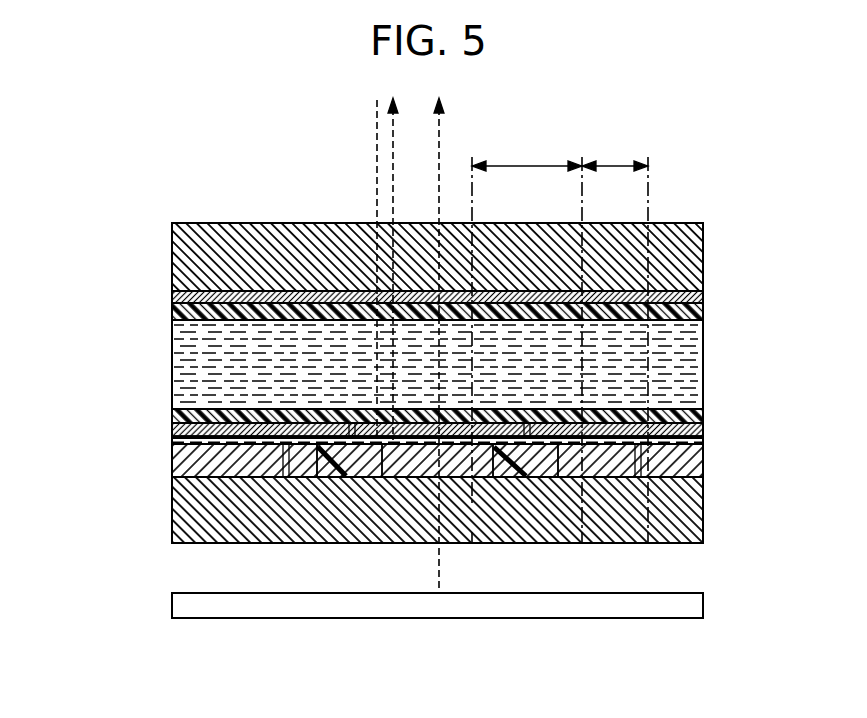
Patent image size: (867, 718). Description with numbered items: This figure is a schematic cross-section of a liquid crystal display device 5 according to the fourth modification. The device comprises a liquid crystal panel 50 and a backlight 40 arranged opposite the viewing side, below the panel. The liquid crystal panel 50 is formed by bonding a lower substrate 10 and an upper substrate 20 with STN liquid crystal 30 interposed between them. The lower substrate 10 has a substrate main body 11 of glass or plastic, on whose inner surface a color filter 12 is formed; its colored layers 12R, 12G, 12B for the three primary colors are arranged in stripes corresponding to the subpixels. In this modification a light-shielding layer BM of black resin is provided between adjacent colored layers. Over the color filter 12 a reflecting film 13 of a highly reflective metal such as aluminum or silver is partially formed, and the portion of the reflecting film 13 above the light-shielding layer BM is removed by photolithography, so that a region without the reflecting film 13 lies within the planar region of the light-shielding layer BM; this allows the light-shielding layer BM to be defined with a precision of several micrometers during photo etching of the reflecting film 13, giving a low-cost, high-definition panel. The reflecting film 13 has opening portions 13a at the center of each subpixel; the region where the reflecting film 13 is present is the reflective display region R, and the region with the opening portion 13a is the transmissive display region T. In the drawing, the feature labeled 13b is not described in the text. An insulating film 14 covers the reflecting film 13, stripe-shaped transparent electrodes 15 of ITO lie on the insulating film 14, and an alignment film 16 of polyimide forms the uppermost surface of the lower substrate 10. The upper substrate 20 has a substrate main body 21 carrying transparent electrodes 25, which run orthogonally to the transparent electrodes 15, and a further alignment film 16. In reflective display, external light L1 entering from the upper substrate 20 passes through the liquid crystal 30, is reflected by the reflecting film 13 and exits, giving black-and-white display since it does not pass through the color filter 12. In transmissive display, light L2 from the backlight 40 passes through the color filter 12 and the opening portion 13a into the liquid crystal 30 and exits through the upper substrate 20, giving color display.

The liquid crystal display device 5 is at (740, 206).
The liquid crystal panel 50 is at (84, 252).
The upper substrate 20 is at (162, 223).
The liquid crystal 30 is at (170, 350).
The lower substrate 10 is at (162, 409).
The substrate main body 21 is at (693, 257).
The transparent electrodes 25 is at (693, 297).
The alignment film 16 is at (693, 309).
The transparent electrodes 15 is at (693, 433).
The insulating film 14 is at (697, 445).
The reflecting film 13 is at (700, 458).
The opening portion 13a is at (285, 446).
The transmissive opening 13b is at (352, 432).
The color filter 12 is at (697, 472).
The colored layer 12R is at (238, 467).
The colored layer 12G is at (403, 468).
The colored layer 12B is at (582, 470).
The light-shielding layer BM is at (347, 478).
The substrate main body 11 is at (695, 516).
The backlight 40 is at (180, 605).
The external light L1 is at (375, 148).
The light from the backlight L2 is at (445, 572).
The reflective display region R is at (527, 334).
The transmissive display region T is at (615, 333).